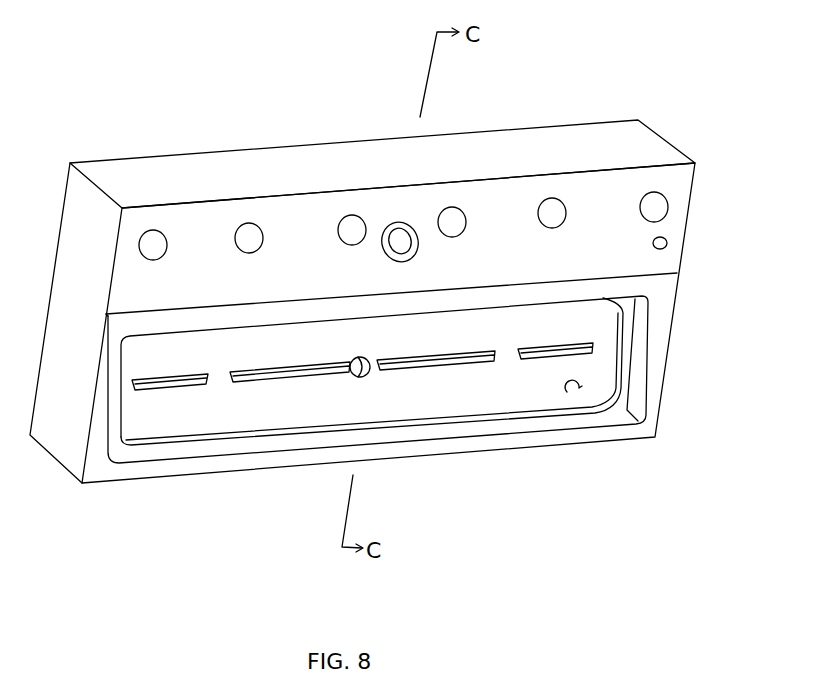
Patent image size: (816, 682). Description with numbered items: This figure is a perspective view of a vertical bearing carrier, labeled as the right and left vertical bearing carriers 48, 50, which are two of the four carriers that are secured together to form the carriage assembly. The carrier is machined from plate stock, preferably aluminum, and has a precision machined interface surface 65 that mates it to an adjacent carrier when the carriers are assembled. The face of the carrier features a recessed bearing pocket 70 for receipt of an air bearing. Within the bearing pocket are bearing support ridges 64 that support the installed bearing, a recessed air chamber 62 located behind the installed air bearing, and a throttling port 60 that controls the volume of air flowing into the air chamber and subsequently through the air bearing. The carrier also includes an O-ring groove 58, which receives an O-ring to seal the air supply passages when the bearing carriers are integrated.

The right vertical bearing carrier 48 is at (390, 357).
The left vertical bearing carrier 50 is at (181, 140).
The O-ring groove 58 is at (412, 222).
The throttling port 60 is at (368, 353).
The recessed air chamber 62 is at (582, 387).
The bearing support ridges 64 is at (597, 343).
The interface surface 65 is at (668, 243).
The recessed bearing pocket 70 is at (590, 422).